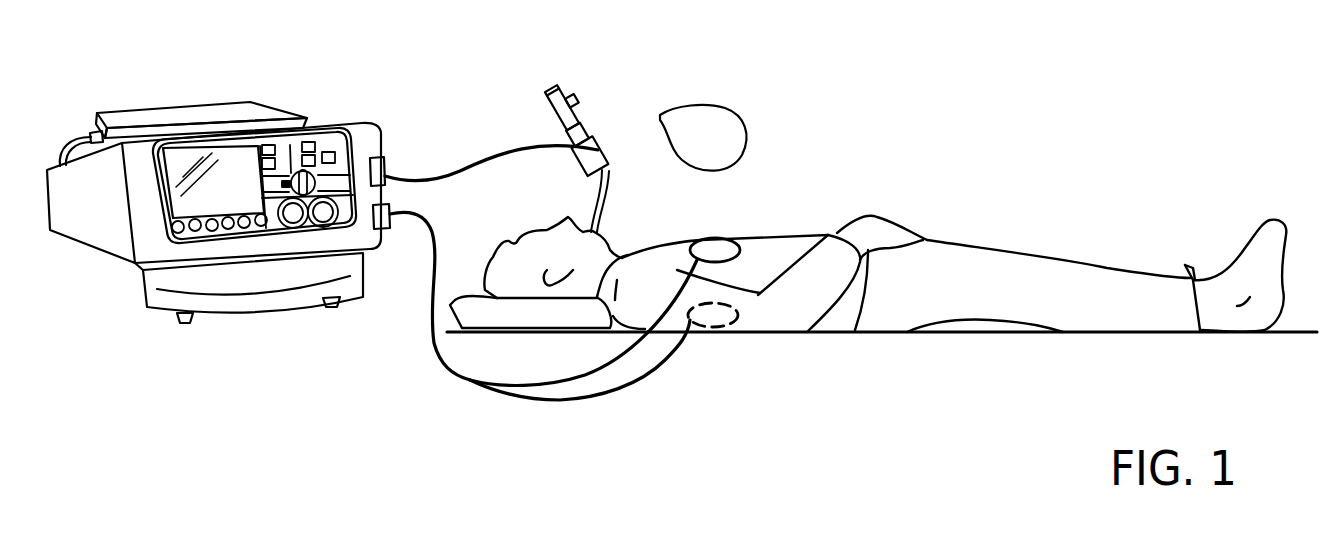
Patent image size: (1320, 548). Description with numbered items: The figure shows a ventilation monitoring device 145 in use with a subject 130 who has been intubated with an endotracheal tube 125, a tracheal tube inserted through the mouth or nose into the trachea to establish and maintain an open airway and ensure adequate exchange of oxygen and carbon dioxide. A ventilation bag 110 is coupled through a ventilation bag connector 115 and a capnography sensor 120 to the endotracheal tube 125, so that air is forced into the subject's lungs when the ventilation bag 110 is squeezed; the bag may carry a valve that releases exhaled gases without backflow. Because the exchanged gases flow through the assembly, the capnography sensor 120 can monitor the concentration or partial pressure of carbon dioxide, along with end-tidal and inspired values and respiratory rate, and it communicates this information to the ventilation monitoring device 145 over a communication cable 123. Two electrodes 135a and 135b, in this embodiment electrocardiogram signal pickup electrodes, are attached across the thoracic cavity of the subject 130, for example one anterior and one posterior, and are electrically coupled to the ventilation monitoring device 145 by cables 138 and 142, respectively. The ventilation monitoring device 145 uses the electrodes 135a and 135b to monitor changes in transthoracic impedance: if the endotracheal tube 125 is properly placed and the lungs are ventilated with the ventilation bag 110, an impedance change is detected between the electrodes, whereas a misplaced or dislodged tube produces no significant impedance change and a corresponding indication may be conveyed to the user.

The ventilation bag 110 is at (744, 110).
The ventilation bag connector 115 is at (639, 86).
The capnography sensor 120 is at (599, 137).
The communication cable 123 is at (473, 157).
The endotracheal tube 125 is at (587, 188).
The subject 130 is at (1106, 258).
The electrode 135a is at (714, 239).
The electrode 135b is at (732, 337).
The cable 138 is at (597, 379).
The cable 142 is at (648, 381).
The ventilation monitoring device 145 is at (336, 115).